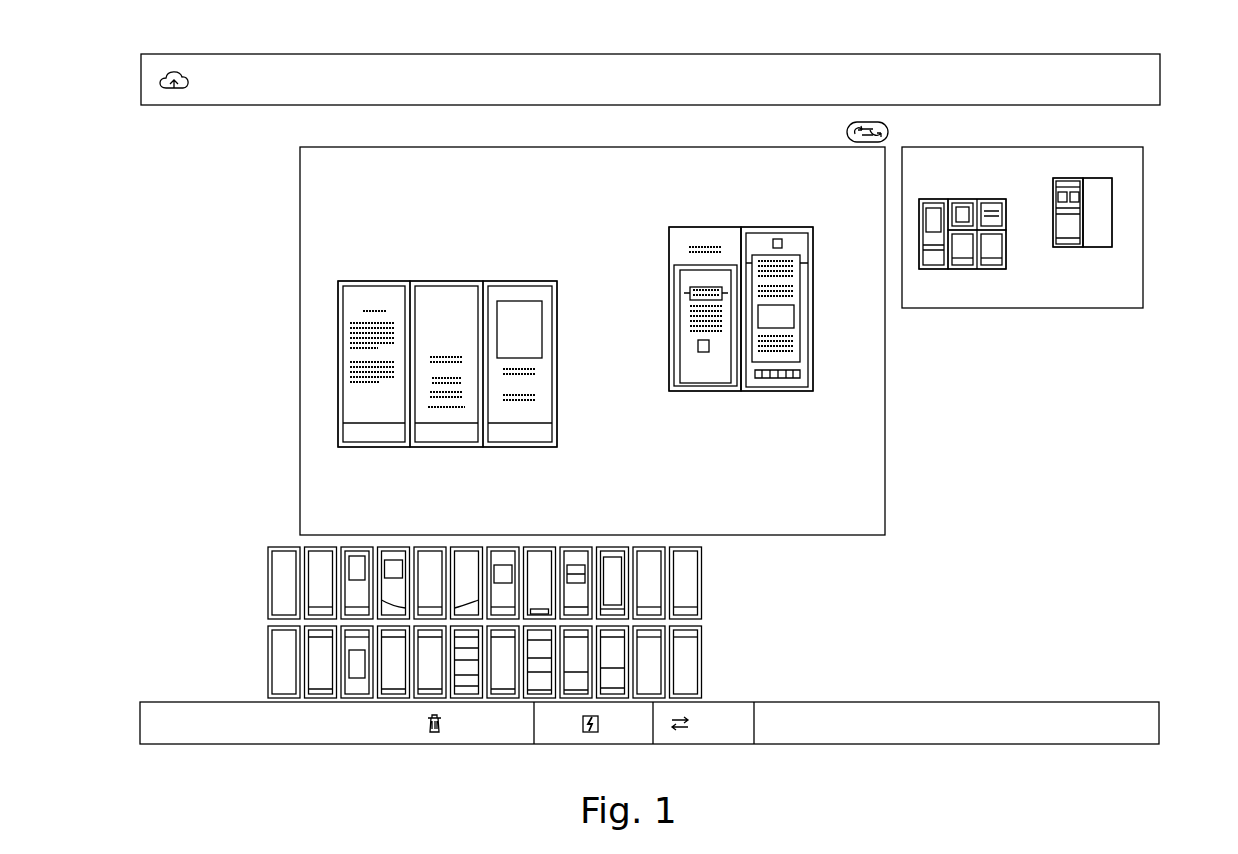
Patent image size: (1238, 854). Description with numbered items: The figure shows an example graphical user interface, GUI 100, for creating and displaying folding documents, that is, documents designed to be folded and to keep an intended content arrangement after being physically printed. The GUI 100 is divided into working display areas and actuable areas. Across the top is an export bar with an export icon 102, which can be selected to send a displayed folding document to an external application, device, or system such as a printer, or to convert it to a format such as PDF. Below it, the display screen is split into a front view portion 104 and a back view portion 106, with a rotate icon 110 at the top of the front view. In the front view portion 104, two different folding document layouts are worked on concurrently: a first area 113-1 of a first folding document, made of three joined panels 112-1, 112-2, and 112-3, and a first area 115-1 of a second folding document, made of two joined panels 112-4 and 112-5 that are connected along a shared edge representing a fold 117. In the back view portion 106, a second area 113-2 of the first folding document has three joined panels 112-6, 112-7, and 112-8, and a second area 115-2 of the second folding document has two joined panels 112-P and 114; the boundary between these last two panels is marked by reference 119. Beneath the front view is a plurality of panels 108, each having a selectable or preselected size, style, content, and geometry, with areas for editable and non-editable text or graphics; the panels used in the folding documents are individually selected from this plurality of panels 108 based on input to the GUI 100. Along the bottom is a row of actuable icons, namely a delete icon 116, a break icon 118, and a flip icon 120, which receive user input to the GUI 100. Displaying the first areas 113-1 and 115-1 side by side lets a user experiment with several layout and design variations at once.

The graphical user interface 100 is at (156, 48).
The export icon 102 is at (276, 81).
The front view portion 104 is at (300, 178).
The back view portion 106 is at (1143, 162).
The plurality of panels 108 is at (286, 538).
The rotate icon 110 is at (846, 132).
The panel 112-1 is at (369, 281).
The panel 112-2 is at (439, 281).
The panel 112-3 is at (516, 281).
The panel 112-4 is at (699, 227).
The panel 112-5 is at (773, 227).
The panel 112-6 is at (931, 199).
The panel 112-7 is at (964, 270).
The panel 112-8 is at (991, 199).
The panel 112-P is at (1067, 248).
The first area of first folding document 113-1 is at (400, 200).
The second area of first folding document 113-2 is at (915, 200).
The panel 114 is at (1098, 248).
The first area of second folding document 115-1 is at (653, 198).
The second area of second folding document 115-2 is at (1076, 167).
The delete icon 116 is at (470, 744).
The fold 117 is at (741, 392).
The break icon 118 is at (597, 744).
The panel divider 119 is at (1084, 179).
The flip icon 120 is at (711, 744).